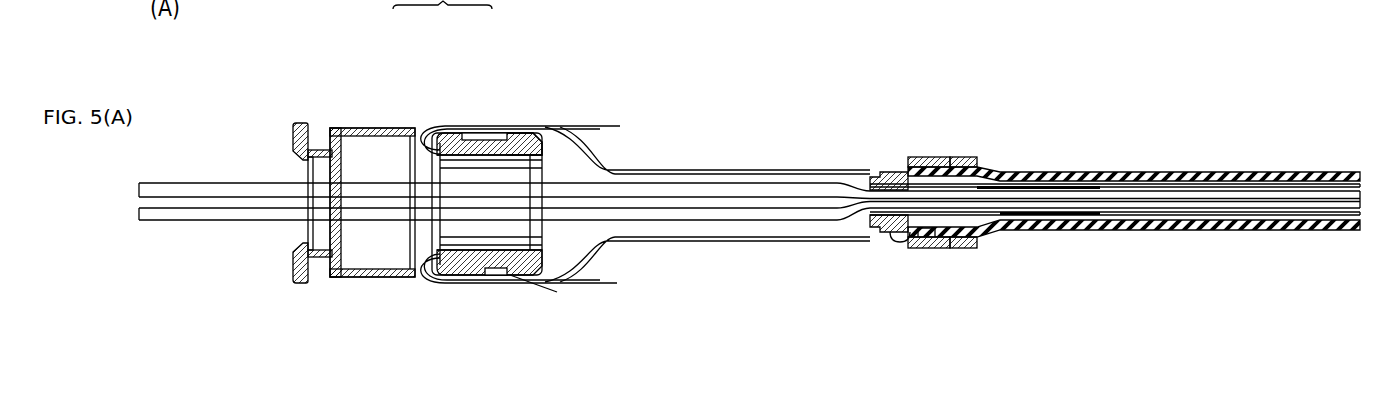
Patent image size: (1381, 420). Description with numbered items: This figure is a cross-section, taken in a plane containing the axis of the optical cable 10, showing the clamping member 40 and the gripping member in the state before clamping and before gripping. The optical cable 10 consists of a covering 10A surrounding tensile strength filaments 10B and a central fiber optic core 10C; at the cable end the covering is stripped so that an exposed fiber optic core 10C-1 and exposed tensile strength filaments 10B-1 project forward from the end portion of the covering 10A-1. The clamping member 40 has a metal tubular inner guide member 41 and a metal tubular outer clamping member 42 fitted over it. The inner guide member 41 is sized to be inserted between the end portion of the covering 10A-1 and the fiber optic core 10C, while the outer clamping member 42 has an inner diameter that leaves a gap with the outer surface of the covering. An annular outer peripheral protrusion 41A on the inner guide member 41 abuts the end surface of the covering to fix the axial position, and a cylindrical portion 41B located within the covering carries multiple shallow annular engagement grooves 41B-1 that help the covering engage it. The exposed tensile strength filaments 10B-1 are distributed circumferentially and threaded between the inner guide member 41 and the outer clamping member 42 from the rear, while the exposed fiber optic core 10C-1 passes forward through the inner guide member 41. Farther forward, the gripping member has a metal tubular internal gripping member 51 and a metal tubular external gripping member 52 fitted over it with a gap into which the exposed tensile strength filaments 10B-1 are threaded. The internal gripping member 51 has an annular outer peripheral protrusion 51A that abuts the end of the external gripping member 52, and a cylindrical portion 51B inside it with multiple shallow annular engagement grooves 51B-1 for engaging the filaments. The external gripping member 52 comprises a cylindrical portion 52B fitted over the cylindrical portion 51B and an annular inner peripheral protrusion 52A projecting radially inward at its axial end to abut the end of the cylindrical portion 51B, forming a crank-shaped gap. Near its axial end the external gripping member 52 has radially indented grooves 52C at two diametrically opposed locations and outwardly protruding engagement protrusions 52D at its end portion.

The optical cable 10 is at (1132, 157).
The covering 10A is at (1108, 160).
The end portion of the covering 10A-1 is at (1050, 160).
The tensile strength filaments 10B is at (967, 250).
The exposed tensile strength filaments 10B-1 is at (607, 165).
The fiber optic core 10C is at (1143, 195).
The exposed fiber optic core 10C-1 is at (745, 193).
The clamping member 40 is at (1025, 73).
The inner guide member 41 is at (940, 157).
The annular outer peripheral protrusion 41A is at (900, 247).
The cylindrical portion 41B is at (945, 250).
The annular engagement grooves 41B-1 is at (928, 250).
The outer clamping member 42 is at (958, 157).
The internal gripping member 51 is at (497, 128).
The annular outer peripheral protrusion 51A is at (523, 128).
The cylindrical portion 51B is at (467, 130).
The annular engagement grooves 51B-1 is at (485, 272).
The external gripping member 52 is at (379, 124).
The annular inner peripheral protrusion 52A is at (310, 173).
The cylindrical portion 52B is at (360, 127).
The indented grooves 52C is at (323, 143).
The engagement protrusions 52D is at (300, 124).